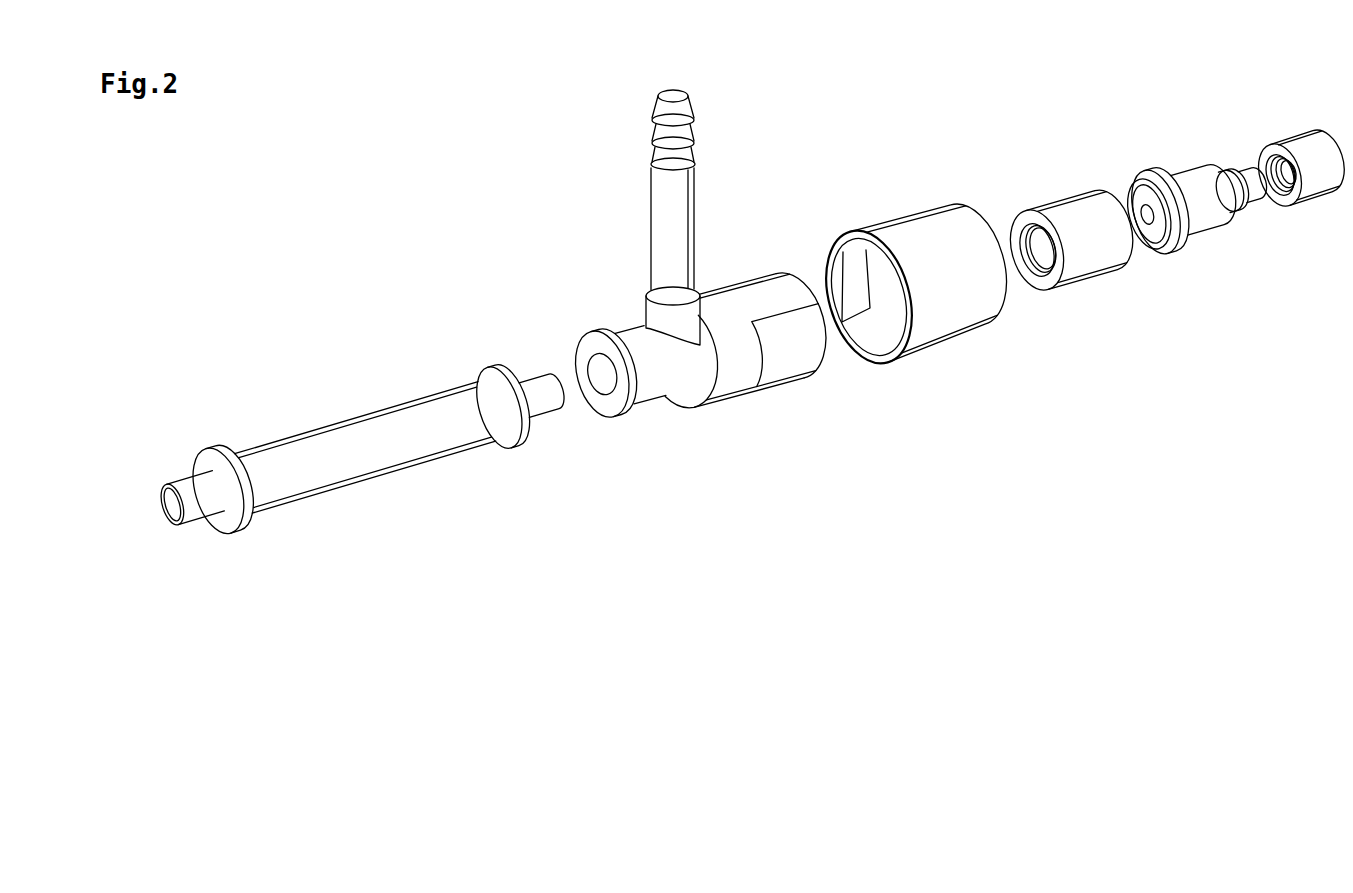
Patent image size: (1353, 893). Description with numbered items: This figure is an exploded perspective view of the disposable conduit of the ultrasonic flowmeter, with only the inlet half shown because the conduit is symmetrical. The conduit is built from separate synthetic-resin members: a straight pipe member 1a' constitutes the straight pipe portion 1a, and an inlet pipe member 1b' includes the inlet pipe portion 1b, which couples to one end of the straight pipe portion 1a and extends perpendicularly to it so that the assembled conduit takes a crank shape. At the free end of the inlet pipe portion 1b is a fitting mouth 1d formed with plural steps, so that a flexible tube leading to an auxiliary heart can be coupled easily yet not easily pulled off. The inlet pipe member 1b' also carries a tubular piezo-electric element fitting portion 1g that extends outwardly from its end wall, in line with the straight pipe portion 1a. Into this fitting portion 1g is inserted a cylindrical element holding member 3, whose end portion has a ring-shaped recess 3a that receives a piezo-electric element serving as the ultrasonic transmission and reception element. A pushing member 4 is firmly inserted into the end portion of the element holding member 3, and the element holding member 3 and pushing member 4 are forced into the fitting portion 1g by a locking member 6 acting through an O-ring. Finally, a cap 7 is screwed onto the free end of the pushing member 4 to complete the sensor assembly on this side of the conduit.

The straight pipe portion 1a is at (362, 445).
The straight pipe member 1a' is at (366, 466).
The inlet pipe portion 1b is at (721, 256).
The inlet pipe member 1b' is at (701, 376).
The fitting mouth 1d is at (688, 113).
The piezo-electric element fitting portion 1g is at (797, 372).
The element holding member 3 is at (1072, 203).
The ring-shaped recess 3a is at (1028, 278).
The pushing member 4 is at (1185, 178).
The locking member 6 is at (945, 316).
The cap 7 is at (1300, 148).